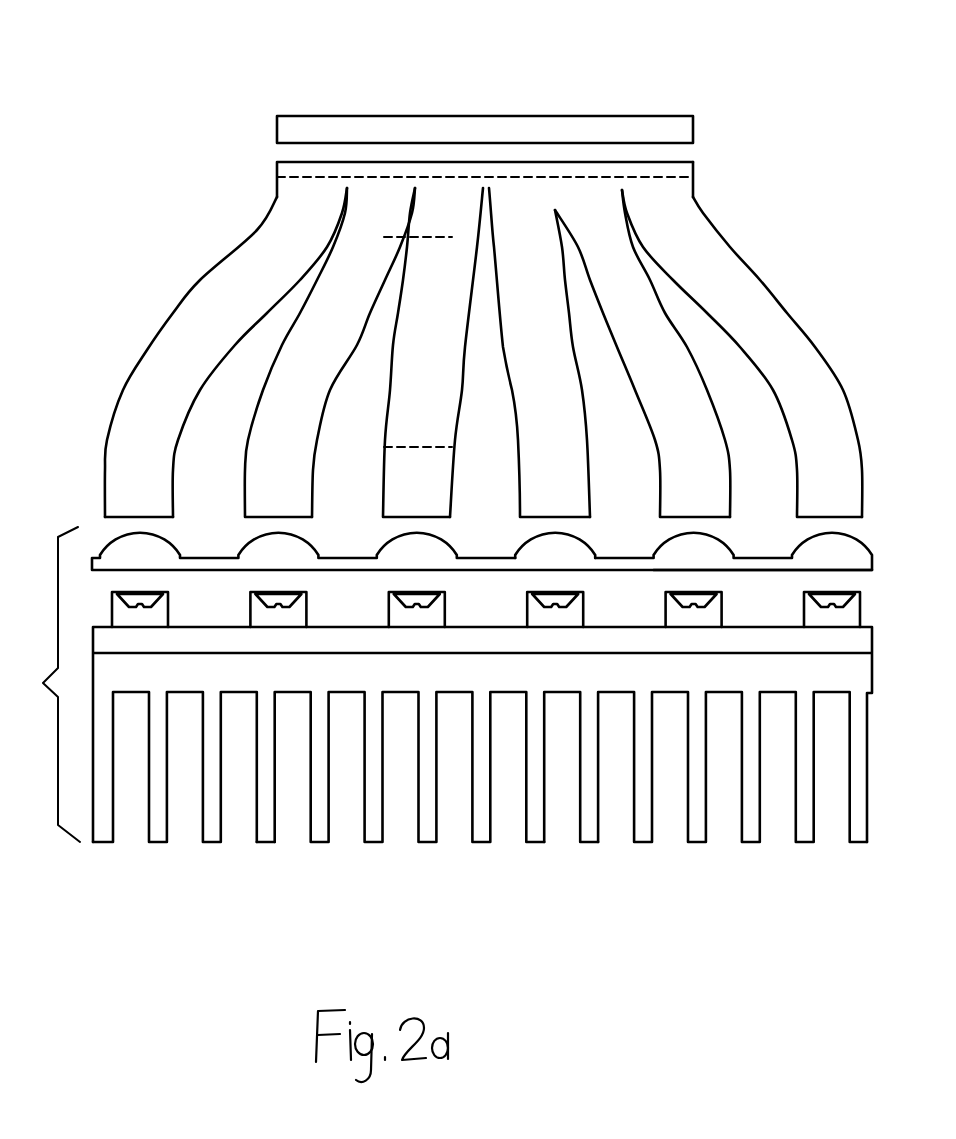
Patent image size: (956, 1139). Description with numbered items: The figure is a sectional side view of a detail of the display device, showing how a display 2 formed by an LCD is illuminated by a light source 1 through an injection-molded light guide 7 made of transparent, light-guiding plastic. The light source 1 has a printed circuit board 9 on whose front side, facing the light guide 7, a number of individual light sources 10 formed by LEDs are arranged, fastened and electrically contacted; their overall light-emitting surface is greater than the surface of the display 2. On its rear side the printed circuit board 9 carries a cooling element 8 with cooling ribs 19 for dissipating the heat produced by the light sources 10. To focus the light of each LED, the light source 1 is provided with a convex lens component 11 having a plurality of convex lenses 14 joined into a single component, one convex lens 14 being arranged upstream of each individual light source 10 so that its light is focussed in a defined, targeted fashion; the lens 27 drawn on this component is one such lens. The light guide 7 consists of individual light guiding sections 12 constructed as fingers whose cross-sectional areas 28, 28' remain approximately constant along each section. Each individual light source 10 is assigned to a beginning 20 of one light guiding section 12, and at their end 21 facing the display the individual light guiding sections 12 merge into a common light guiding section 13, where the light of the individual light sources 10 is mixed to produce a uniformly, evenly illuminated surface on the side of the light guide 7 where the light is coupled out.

The light source 1 is at (447, 685).
The display 2 is at (422, 130).
The light guide 7 is at (450, 277).
The cooling element 8 is at (252, 673).
The printed circuit board 9 is at (482, 779).
The individual light sources 10 is at (153, 610).
The convex lens component 11 is at (337, 563).
The individual light guiding sections 12 is at (193, 352).
The common light guiding section 13 is at (287, 168).
The convex lens 14 is at (718, 562).
The cooling ribs 19 is at (541, 795).
The beginning of an individual light guiding section 20 is at (123, 500).
The end facing the display 21 is at (685, 197).
The lens 27 is at (550, 533).
The cross-sectional area 28 is at (442, 499).
The cross-sectional area 28' is at (475, 119).